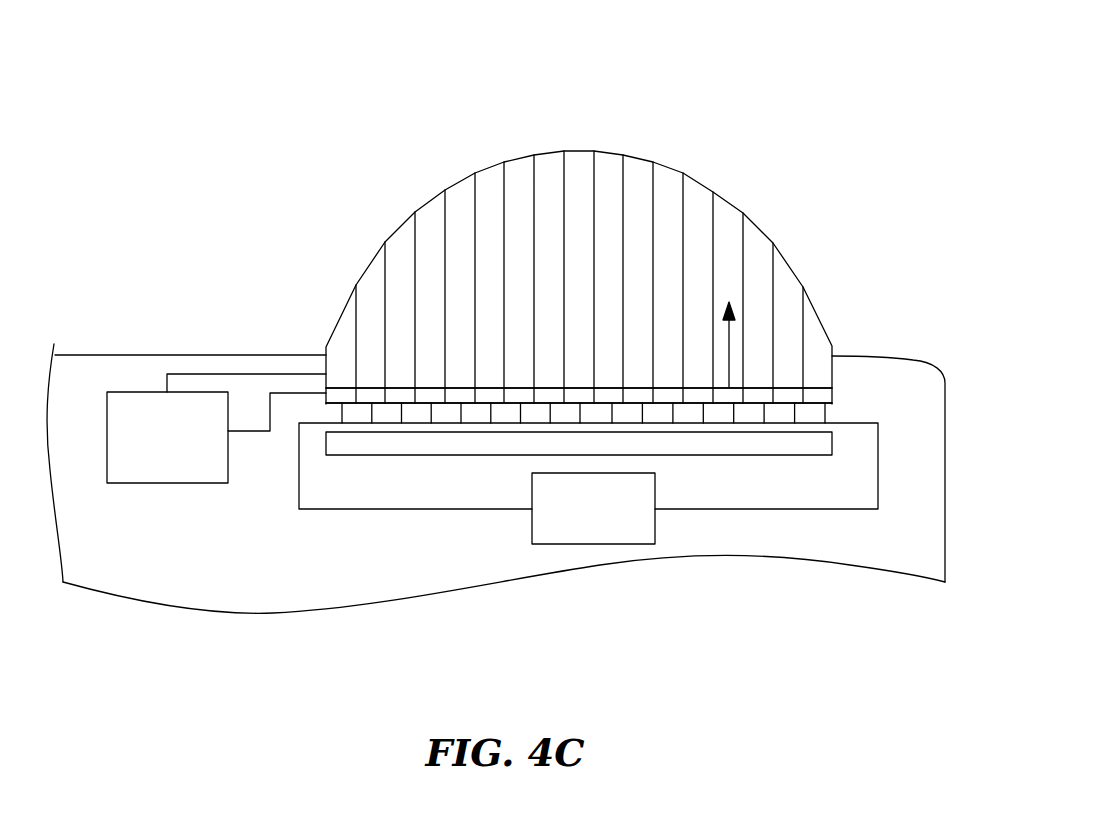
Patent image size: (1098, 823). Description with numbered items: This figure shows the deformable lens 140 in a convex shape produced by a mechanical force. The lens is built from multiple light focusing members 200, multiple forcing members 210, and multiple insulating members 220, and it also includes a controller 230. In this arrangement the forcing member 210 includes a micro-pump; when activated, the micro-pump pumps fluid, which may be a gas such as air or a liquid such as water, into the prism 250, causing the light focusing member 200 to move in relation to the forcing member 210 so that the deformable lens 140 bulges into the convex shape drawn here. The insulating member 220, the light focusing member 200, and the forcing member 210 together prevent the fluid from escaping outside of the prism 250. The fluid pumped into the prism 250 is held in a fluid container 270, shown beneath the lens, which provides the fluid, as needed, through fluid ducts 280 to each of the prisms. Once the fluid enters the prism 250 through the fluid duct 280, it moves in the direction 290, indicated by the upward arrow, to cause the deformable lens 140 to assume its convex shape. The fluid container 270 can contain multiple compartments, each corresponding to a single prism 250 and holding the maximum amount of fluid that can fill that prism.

The deformable lens 140 is at (926, 121).
The light focusing member 200 is at (733, 200).
The insulating member 220 is at (711, 267).
The prism 250 is at (729, 227).
The direction 290 is at (729, 378).
The forcing member 210 is at (740, 396).
The fluid duct 280 is at (299, 505).
The controller 230 is at (216, 428).
The fluid container 270 is at (593, 508).